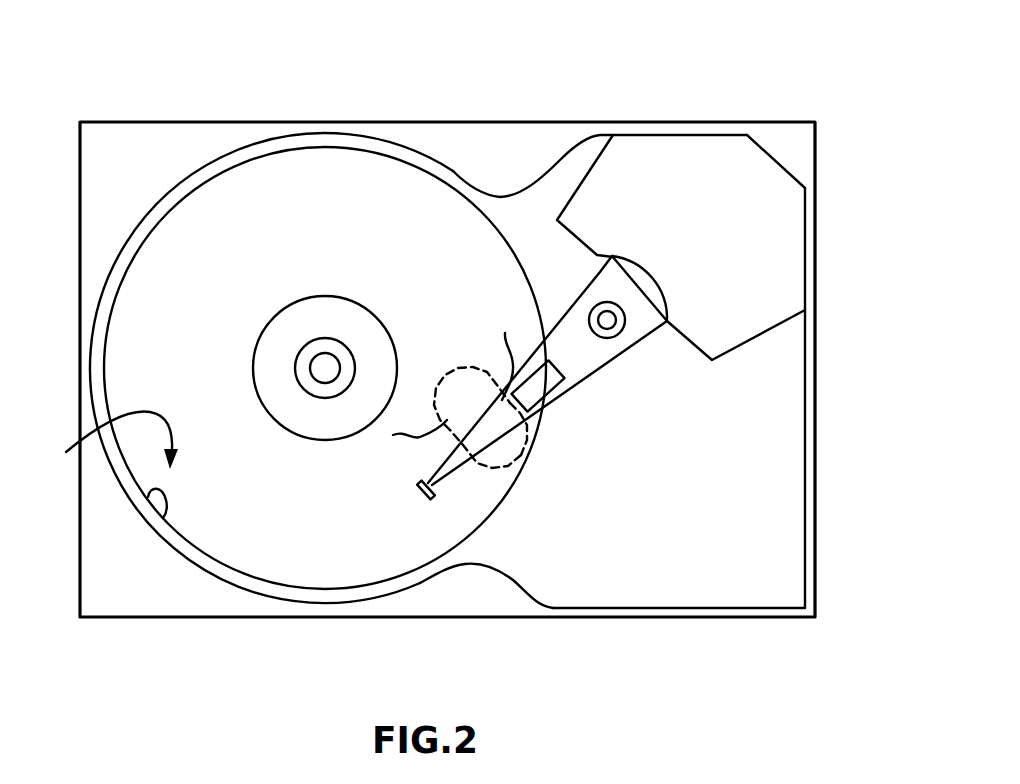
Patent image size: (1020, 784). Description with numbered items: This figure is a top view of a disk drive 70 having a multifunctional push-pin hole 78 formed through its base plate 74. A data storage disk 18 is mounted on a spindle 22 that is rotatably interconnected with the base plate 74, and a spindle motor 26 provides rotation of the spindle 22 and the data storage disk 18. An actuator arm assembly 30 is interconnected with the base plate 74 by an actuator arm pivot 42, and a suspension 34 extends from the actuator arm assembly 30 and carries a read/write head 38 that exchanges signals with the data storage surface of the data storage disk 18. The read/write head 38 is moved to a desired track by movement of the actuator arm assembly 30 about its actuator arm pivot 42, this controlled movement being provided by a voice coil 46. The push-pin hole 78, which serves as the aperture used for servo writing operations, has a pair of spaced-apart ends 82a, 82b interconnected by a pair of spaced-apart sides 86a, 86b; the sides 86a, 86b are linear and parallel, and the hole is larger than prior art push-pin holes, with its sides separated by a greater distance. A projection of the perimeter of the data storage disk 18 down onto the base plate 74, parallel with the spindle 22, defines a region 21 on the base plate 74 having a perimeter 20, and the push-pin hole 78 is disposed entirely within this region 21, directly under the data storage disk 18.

The data storage disk 18 is at (320, 170).
The perimeter 20 is at (150, 496).
The region 21 is at (108, 443).
The spindle 22 is at (362, 333).
The spindle motor 26 is at (326, 382).
The actuator arm assembly 30 is at (580, 347).
The suspension 34 is at (446, 474).
The read/write head 38 is at (417, 493).
The actuator arm pivot 42 is at (607, 320).
The voice coil 46 is at (773, 258).
The disk drive 70 is at (697, 71).
The base plate 74 is at (808, 556).
The push-pin hole 78 is at (530, 438).
The end of push-pin hole 82a is at (457, 365).
The end of push-pin hole 82b is at (517, 468).
The side of push-pin hole 86a is at (393, 435).
The side of push-pin hole 86b is at (505, 333).